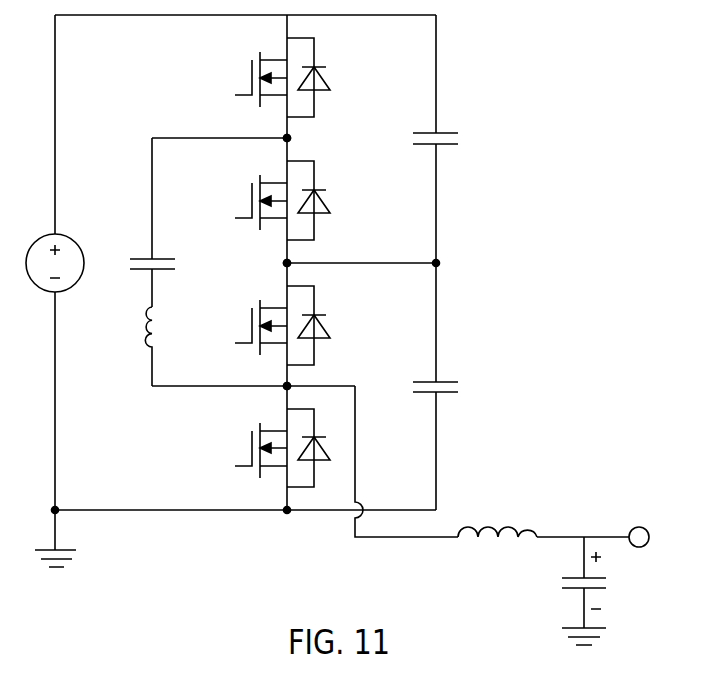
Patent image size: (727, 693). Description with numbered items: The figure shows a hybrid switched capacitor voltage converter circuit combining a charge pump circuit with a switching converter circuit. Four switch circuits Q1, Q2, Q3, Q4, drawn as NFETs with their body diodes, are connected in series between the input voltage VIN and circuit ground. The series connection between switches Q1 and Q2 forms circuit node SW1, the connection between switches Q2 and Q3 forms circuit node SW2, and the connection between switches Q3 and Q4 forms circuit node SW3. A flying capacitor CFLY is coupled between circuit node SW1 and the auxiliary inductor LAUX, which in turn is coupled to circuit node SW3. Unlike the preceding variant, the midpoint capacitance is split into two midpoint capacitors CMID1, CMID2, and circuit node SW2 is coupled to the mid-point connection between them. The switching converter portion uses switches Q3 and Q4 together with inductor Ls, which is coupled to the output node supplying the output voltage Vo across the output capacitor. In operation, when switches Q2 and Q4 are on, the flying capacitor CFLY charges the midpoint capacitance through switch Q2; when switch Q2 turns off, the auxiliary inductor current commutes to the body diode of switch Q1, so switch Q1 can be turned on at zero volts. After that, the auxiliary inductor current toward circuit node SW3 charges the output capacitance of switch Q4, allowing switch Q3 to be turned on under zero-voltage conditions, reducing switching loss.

The input voltage VIN is at (54, 243).
The flying capacitor CFLY is at (140, 222).
The auxiliary inductor LAUX is at (119, 345).
The midpoint capacitor CMID2 is at (455, 139).
The midpoint capacitor CMID1 is at (455, 386).
The switch circuit Q1 is at (277, 77).
The switch circuit Q2 is at (276, 200).
The switch circuit Q3 is at (276, 325).
The switch circuit Q4 is at (276, 448).
The circuit node SW1 is at (310, 144).
The circuit node SW2 is at (265, 265).
The circuit node SW3 is at (328, 375).
The inductor Ls is at (497, 515).
The output voltage Vo is at (599, 591).